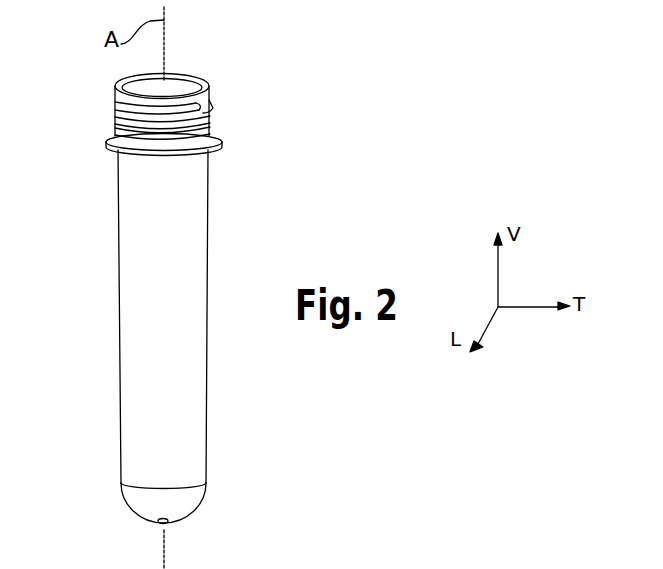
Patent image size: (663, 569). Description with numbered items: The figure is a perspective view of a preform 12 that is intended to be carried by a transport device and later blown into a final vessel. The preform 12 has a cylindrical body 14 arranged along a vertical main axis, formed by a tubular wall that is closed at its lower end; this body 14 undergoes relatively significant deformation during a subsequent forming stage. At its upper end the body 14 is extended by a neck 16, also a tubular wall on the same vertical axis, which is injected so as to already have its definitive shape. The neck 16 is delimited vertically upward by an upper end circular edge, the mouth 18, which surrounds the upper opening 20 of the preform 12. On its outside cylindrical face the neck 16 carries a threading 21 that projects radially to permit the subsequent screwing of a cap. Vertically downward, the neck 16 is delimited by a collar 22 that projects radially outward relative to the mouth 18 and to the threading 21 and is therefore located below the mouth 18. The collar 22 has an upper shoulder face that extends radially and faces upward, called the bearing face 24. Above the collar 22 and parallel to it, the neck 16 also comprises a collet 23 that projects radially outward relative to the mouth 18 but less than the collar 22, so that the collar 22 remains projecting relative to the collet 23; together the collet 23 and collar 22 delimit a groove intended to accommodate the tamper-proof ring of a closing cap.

The preform 12 is at (92, 341).
The cylindrical body 14 is at (177, 365).
The neck 16 is at (213, 111).
The mouth 18 is at (209, 78).
The upper opening 20 is at (178, 82).
The threading 21 is at (115, 104).
The collar 22 is at (231, 136).
The collet 23 is at (116, 135).
The bearing face 24 is at (205, 145).